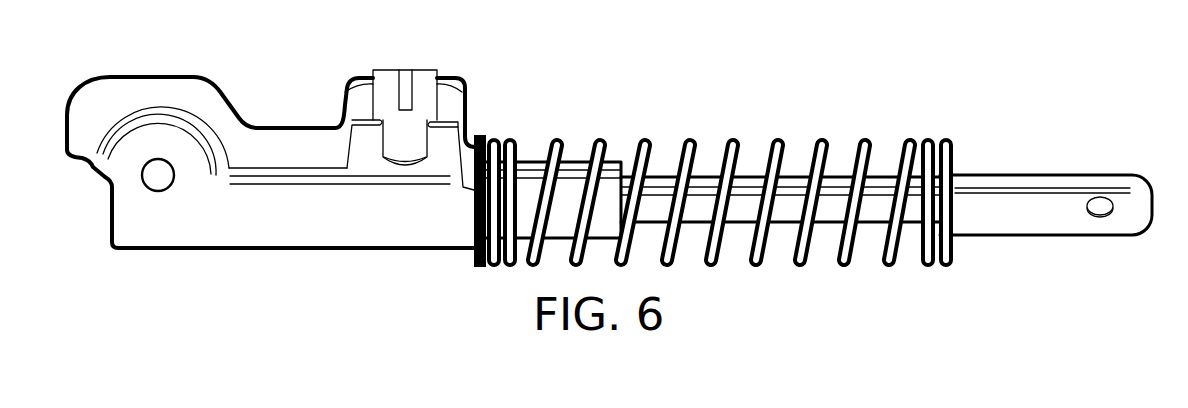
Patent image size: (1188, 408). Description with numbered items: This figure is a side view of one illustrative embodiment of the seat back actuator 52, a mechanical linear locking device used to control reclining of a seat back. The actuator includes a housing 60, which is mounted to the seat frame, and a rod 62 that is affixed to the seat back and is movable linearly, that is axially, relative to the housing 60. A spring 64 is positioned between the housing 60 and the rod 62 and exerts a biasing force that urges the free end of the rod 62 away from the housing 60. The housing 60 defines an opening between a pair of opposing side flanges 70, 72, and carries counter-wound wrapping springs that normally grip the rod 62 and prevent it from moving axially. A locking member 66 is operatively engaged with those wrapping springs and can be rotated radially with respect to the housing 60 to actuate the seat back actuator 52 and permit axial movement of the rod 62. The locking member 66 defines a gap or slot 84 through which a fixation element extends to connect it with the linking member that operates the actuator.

The seat back actuator 52 is at (752, 57).
The housing 60 is at (110, 213).
The rod 62 is at (1040, 175).
The spring 64 is at (820, 140).
The locking member 66 is at (391, 88).
The side flange 70 is at (452, 82).
The side flange 72 is at (347, 103).
The slot 84 is at (404, 96).